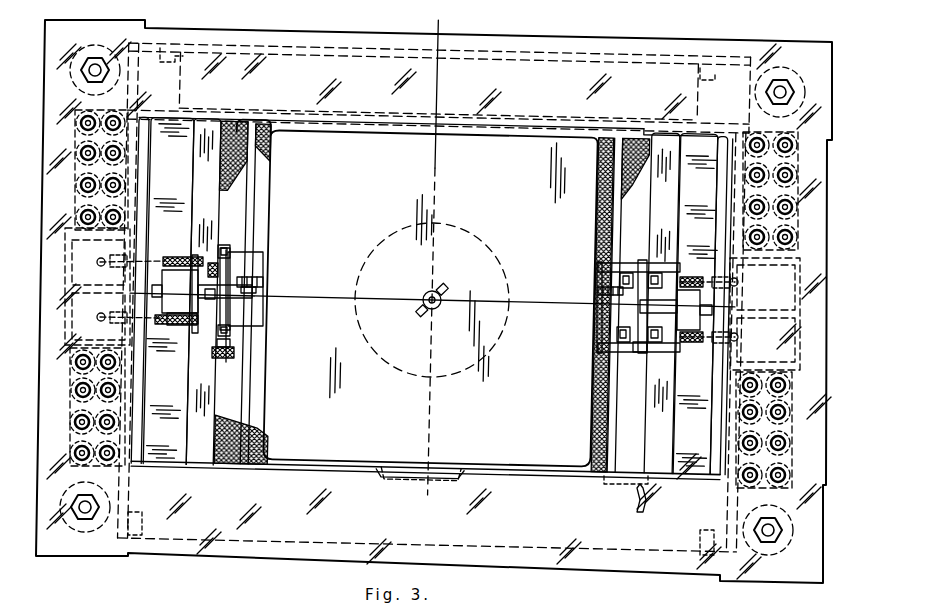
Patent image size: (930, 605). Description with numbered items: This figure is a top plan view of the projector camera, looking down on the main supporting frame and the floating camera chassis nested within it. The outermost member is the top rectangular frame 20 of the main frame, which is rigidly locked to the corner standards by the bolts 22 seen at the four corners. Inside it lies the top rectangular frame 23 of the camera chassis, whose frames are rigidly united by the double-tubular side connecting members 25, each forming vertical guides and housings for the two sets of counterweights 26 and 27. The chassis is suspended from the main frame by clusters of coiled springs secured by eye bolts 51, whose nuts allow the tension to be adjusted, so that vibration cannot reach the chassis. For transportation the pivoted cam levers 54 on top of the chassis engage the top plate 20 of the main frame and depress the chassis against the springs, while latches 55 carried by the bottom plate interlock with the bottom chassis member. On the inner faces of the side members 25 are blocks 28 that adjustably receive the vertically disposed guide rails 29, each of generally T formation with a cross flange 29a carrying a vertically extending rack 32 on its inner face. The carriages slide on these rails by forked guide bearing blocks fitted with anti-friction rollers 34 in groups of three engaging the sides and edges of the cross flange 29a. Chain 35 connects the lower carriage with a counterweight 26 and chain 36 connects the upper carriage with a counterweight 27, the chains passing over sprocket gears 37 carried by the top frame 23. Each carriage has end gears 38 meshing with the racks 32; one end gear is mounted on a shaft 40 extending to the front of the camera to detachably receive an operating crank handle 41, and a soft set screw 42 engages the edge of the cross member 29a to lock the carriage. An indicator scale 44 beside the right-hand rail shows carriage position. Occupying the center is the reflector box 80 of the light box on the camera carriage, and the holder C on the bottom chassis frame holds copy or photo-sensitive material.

The top and bottom rectangular frames 20 is at (355, 37).
The bolts 22 is at (788, 90).
The top rectangular frame 23 is at (188, 198).
The side connecting members 25 is at (70, 288).
The counterweights 26 is at (433, 273).
The counterweights 27 is at (433, 327).
The blocks 28 is at (230, 260).
The guide rails 29 is at (205, 295).
The cross flange 29a is at (240, 294).
The rack 32 is at (200, 283).
The anti-friction rollers 34 is at (655, 272).
The chain 35 is at (176, 258).
The chain 36 is at (178, 325).
The sprocket gears 37 is at (220, 250).
The end gears 38 is at (262, 280).
The shaft 40 is at (250, 218).
The operating crank handle 41 is at (636, 508).
The set screw 42 is at (224, 360).
The indicator scale 44 is at (604, 322).
The eye bolts 51 is at (84, 186).
The pivoted cam levers 54 is at (168, 52).
The latches 55 is at (119, 602).
The reflector box 80 is at (277, 172).
The holder C is at (197, 413).